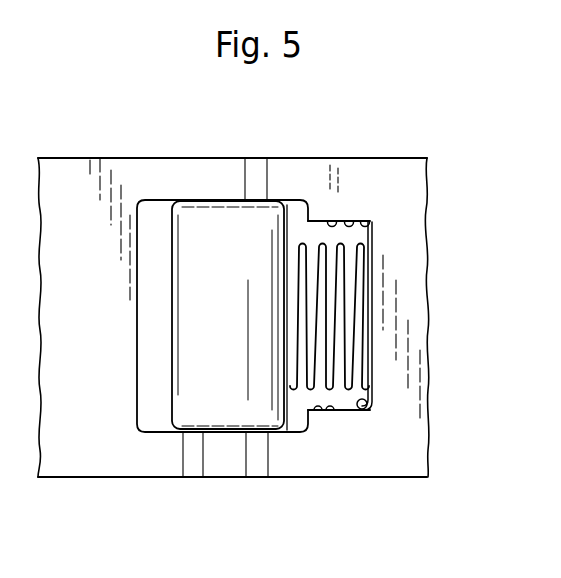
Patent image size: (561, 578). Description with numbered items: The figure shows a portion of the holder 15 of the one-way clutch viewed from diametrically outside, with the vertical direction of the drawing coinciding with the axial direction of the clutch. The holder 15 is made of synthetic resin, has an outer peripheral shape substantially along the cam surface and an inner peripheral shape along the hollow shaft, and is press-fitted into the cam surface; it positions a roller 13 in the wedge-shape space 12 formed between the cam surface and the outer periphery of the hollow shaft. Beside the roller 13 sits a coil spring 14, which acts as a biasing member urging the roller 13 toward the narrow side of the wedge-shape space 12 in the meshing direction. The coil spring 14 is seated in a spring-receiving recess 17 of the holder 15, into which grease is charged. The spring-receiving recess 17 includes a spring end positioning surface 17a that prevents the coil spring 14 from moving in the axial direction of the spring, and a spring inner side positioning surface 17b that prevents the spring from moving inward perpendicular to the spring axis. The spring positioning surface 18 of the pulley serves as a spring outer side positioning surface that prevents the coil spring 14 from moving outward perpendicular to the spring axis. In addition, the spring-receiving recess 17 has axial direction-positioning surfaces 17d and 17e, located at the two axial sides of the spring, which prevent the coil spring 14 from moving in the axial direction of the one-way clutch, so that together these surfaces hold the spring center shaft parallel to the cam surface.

The wedge-shape space 12 is at (152, 212).
The roller 13 is at (205, 216).
The coil spring 14 is at (300, 245).
The holder 15 is at (412, 455).
The spring-receiving recess 17 is at (349, 220).
The spring end positioning surface 17a is at (362, 410).
The spring inner side positioning surface 17b is at (318, 404).
The axial direction-positioning surface 17d is at (329, 408).
The axial direction-positioning surface 17e is at (362, 220).
The spring positioning surface 18 is at (370, 224).